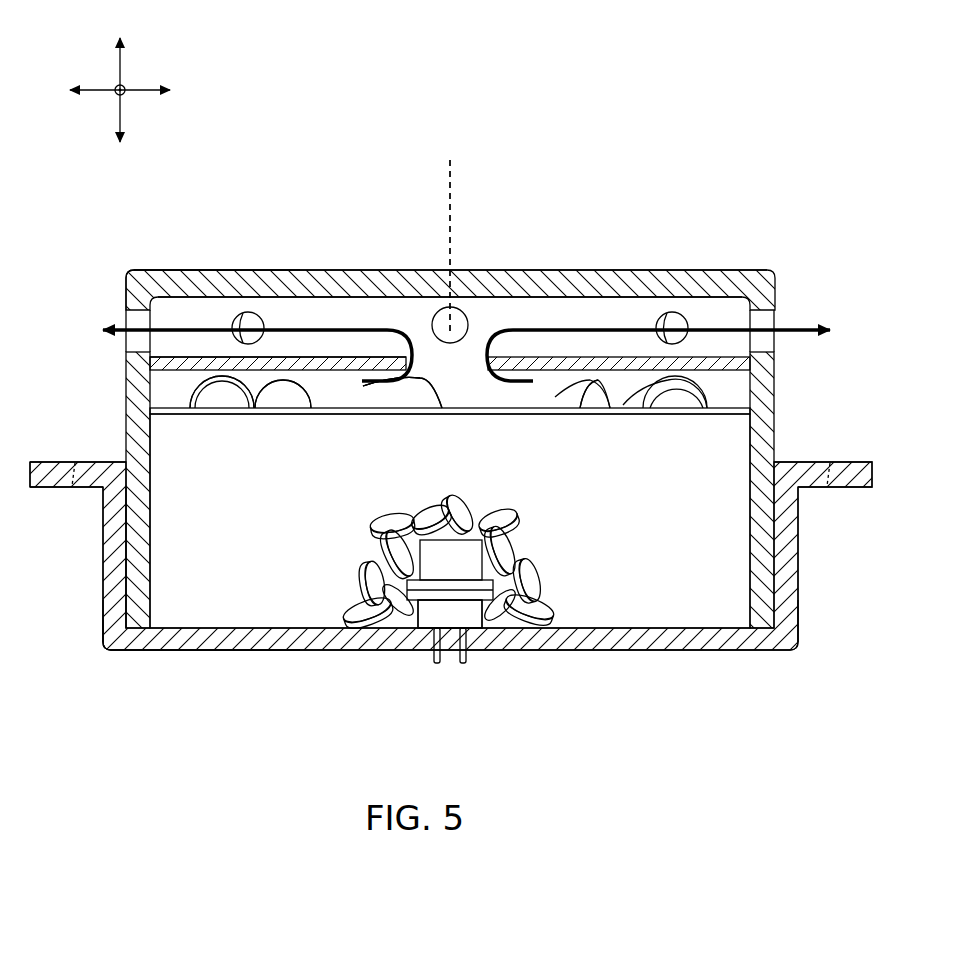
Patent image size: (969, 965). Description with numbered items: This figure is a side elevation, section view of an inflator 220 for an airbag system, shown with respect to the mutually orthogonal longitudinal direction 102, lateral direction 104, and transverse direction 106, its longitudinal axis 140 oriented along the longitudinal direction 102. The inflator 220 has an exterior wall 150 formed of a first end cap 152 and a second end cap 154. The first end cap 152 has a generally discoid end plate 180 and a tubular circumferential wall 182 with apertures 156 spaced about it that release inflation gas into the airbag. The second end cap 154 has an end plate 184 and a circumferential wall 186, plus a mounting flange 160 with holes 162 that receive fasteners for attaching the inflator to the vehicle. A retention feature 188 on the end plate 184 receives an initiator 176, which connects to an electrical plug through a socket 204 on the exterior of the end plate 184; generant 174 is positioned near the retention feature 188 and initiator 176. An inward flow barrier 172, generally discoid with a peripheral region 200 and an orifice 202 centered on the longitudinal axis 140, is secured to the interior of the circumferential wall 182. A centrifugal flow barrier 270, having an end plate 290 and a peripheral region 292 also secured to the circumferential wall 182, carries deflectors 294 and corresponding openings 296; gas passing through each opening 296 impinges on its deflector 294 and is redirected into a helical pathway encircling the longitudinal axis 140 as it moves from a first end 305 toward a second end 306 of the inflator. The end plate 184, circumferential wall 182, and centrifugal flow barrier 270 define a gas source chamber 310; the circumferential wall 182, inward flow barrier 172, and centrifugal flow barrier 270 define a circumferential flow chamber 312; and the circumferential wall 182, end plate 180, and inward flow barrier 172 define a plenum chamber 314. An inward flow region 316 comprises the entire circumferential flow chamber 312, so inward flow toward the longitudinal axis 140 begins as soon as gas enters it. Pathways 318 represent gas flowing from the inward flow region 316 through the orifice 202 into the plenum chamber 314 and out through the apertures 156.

The longitudinal direction 102 is at (122, 70).
The lateral direction 104 is at (160, 85).
The transverse direction 106 is at (124, 95).
The longitudinal axis 140 is at (452, 186).
The exterior wall 150 is at (50, 452).
The first end cap 152 is at (750, 232).
The second end cap 154 is at (752, 673).
The apertures 156 is at (243, 314).
The mounting flange 160 is at (857, 456).
The holes 162 is at (72, 487).
The inward flow barrier 172 is at (205, 348).
The generant 174 is at (508, 548).
The initiator 176 is at (428, 604).
The end plate 180 is at (372, 284).
The circumferential wall 182 is at (137, 388).
The end plate 184 is at (675, 646).
The circumferential wall 186 is at (110, 603).
The retention feature 188 is at (495, 640).
The peripheral region 200 is at (765, 358).
The orifice 202 is at (426, 321).
The socket 204 is at (468, 645).
The inflator 220 is at (697, 108).
The centrifugal flow barrier 270 is at (558, 478).
The end plate 290 is at (350, 412).
The peripheral region 292 is at (757, 410).
The deflectors 294 is at (283, 400).
The openings 296 is at (225, 402).
The first end 305 is at (85, 662).
The second end 306 is at (123, 262).
The gas source chamber 310 is at (722, 598).
The circumferential flow chamber 312 is at (738, 385).
The plenum chamber 314 is at (583, 312).
The inward flow region 316 is at (355, 398).
The pathways 318 is at (118, 325).